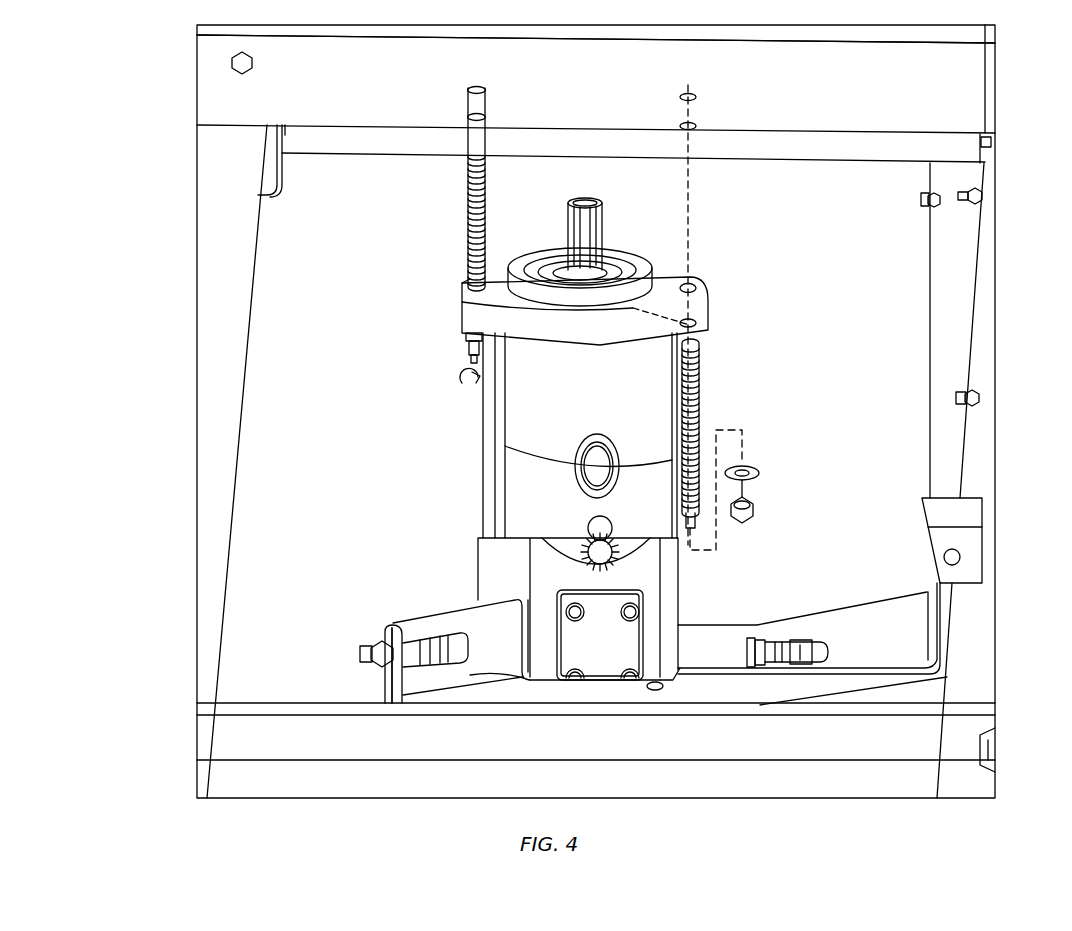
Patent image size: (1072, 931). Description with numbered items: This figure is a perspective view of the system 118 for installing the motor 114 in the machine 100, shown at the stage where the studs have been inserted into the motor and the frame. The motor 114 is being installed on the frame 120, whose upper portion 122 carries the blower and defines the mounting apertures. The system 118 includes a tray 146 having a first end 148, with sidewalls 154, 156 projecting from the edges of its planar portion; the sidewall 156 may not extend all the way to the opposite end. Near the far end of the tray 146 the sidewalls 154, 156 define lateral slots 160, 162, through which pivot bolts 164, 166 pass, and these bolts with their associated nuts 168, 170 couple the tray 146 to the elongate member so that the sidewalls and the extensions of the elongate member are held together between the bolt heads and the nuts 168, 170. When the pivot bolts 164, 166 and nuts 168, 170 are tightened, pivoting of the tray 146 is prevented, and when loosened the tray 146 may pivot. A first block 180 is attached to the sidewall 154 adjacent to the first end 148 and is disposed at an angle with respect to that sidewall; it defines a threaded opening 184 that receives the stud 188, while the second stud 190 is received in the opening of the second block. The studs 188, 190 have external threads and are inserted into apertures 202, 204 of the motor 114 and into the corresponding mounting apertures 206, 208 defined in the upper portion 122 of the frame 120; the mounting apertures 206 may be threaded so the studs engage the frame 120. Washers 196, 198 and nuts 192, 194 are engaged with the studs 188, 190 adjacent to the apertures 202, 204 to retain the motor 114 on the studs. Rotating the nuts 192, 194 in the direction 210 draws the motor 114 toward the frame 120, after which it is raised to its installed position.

The machine 100 is at (138, 115).
The motor 114 is at (535, 405).
The system 118 is at (447, 517).
The frame 120 is at (940, 104).
The upper portion 122 is at (880, 90).
The tray 146 is at (790, 678).
The first end 148 is at (713, 670).
The sidewall 154 is at (880, 622).
The sidewall 156 is at (483, 655).
The lateral slot 160 is at (790, 648).
The lateral slot 162 is at (450, 645).
The pivot bolt 164 is at (750, 650).
The pivot bolt 166 is at (368, 650).
The nut 168 is at (808, 640).
The nut 170 is at (390, 632).
The first block 180 is at (975, 560).
The threaded opening 184 is at (960, 557).
The stud 188 is at (698, 375).
The stud 190 is at (482, 214).
The nut 192 is at (758, 516).
The nut 194 is at (462, 340).
The washer 196 is at (750, 466).
The washer 198 is at (466, 335).
The aperture 202 is at (708, 302).
The aperture 204 is at (462, 292).
The mounting aperture 206 is at (692, 85).
The mounting aperture 208 is at (480, 80).
The direction 210 is at (466, 393).